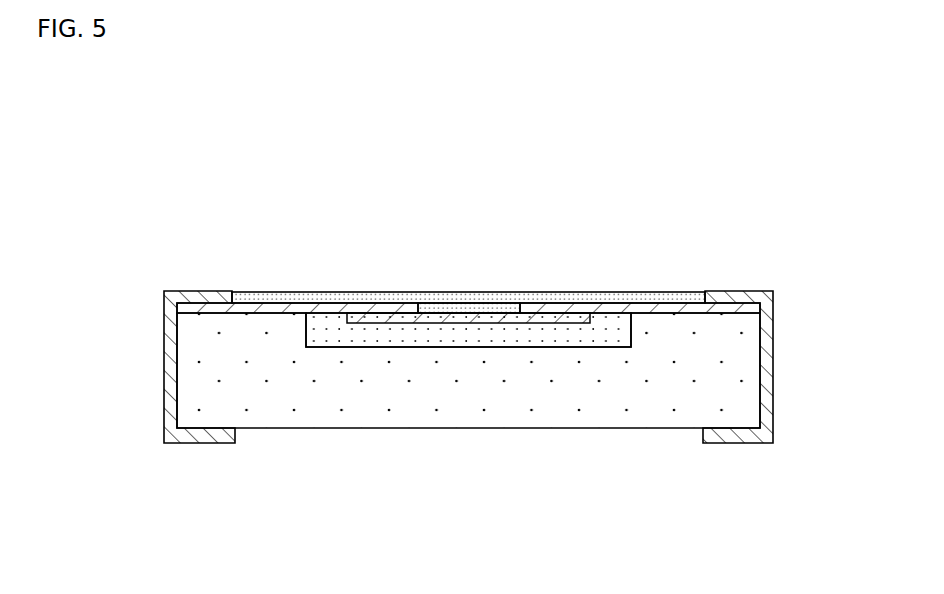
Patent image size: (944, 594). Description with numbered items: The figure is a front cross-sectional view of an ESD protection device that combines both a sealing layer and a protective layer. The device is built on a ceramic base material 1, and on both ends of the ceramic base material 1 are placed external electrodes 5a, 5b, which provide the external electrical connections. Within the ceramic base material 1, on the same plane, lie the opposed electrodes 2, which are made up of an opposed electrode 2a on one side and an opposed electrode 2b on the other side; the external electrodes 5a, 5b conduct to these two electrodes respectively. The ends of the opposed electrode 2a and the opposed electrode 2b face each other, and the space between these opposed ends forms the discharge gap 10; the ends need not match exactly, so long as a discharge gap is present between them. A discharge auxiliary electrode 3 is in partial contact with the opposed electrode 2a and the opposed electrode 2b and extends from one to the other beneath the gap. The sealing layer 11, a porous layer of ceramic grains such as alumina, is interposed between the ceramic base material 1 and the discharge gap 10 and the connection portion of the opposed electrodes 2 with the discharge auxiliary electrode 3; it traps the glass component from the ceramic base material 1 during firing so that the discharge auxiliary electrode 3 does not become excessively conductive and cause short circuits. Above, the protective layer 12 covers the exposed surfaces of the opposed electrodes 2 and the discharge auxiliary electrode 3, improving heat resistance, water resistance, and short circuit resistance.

The ceramic base material 1 is at (648, 429).
The opposed electrodes 2 is at (497, 122).
The opposed electrode on one side 2a is at (351, 303).
The opposed electrode on the other side 2b is at (555, 303).
The discharge auxiliary electrode 3 is at (500, 323).
The external electrode 5a is at (163, 357).
The external electrode 5b is at (773, 345).
The discharge gap 10 is at (470, 300).
The sealing layer 11 is at (327, 347).
The protective layer 12 is at (300, 291).